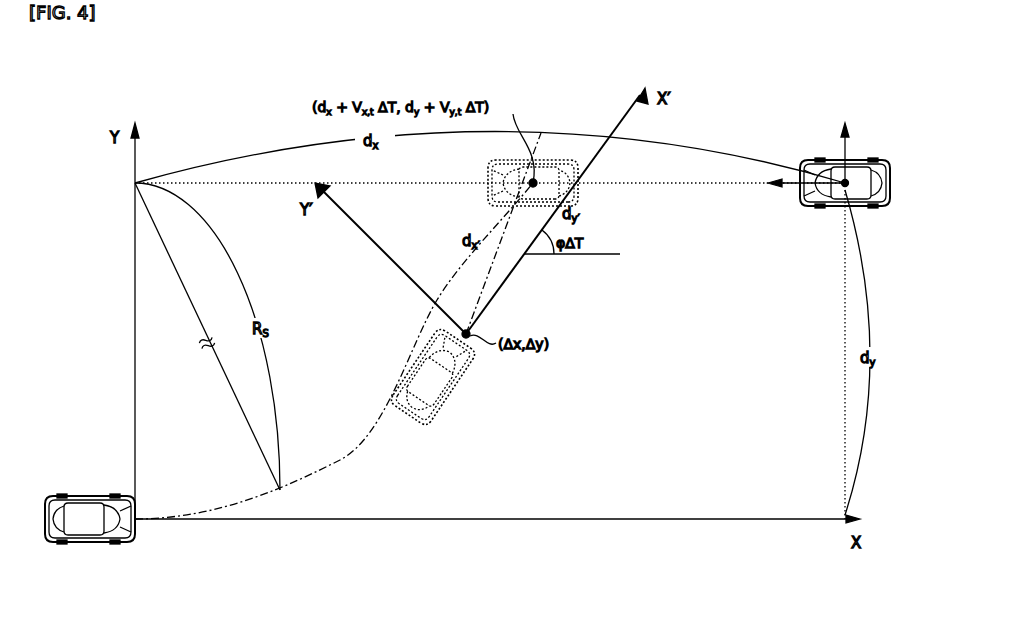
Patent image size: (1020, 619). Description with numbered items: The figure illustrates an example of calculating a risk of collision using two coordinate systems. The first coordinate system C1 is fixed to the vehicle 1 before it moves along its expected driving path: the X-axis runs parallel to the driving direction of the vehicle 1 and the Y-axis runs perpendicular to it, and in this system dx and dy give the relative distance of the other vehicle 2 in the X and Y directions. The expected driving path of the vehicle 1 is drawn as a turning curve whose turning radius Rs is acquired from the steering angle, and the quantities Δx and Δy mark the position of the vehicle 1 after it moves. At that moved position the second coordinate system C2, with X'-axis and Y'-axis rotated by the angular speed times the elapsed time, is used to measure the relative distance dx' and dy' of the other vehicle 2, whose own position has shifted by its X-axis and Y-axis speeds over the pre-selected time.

The vehicle 1 is at (83, 532).
The other vehicle 2 is at (867, 190).
The first coordinate system C1 is at (132, 306).
The second coordinate system C2 is at (380, 248).